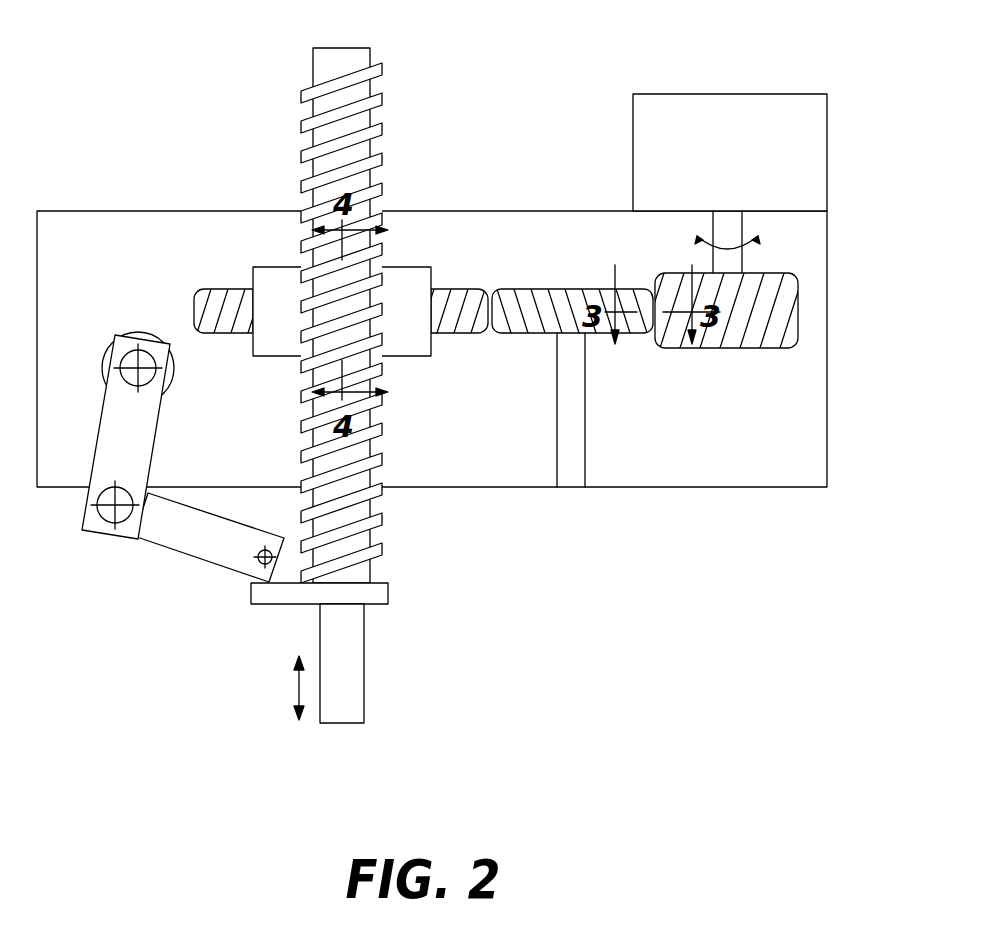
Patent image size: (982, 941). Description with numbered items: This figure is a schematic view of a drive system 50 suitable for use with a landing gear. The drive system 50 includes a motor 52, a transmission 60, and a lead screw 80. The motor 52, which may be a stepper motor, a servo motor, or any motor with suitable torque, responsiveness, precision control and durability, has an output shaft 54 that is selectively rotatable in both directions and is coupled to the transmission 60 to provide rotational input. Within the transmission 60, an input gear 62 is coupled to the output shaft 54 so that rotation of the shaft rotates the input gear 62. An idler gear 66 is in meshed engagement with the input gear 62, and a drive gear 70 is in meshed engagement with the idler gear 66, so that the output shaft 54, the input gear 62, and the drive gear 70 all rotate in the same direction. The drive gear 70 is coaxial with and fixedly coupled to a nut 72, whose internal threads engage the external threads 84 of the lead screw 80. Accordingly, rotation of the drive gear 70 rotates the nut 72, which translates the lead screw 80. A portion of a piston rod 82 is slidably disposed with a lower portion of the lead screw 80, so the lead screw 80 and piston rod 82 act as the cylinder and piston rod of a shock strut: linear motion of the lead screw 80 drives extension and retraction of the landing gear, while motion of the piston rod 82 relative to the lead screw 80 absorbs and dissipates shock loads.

The drive system 50 is at (90, 84).
The motor 52 is at (743, 93).
The output shaft 54 is at (737, 261).
The transmission 60 is at (720, 489).
The input gear 62 is at (797, 304).
The idler gear 66 is at (505, 290).
The drive gear 70 is at (212, 290).
The nut 72 is at (268, 273).
The lead screw 80 is at (307, 315).
The piston rod 82 is at (364, 672).
The external threads 84 is at (312, 118).